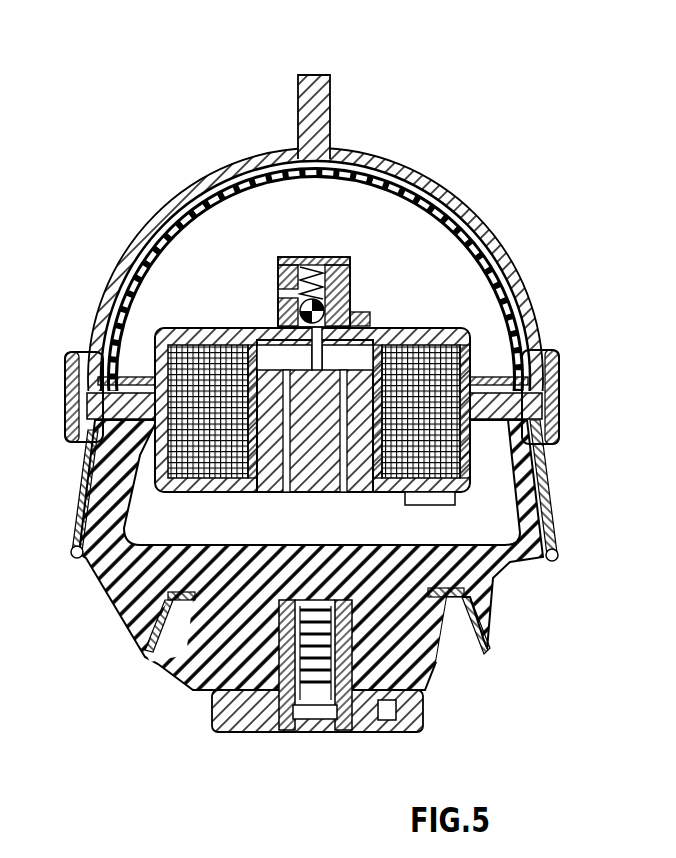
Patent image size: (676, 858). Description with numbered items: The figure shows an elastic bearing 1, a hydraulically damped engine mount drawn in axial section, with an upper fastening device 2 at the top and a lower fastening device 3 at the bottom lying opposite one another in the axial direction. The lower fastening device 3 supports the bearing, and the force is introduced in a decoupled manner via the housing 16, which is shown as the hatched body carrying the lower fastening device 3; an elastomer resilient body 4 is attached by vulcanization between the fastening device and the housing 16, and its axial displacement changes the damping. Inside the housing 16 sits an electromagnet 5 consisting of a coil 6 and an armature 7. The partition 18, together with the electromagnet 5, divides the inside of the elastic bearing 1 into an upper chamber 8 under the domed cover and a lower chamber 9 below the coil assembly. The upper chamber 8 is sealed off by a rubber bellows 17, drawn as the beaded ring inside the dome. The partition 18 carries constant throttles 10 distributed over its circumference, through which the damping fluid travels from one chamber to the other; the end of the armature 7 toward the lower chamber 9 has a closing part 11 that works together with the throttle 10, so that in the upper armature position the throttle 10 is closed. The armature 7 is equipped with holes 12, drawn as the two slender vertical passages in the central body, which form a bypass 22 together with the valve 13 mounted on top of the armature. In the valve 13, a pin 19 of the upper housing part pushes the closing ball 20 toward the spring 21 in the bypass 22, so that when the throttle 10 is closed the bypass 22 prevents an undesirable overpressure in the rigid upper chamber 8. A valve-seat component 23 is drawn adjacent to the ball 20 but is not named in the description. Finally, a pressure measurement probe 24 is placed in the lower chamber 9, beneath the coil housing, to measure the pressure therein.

The elastic bearing 1 is at (466, 142).
The upper fastening device 2 is at (314, 58).
The lower fastening device 3 is at (320, 738).
The elastomer resilient body 4 is at (193, 667).
The electromagnet 5 is at (395, 330).
The coil 6 is at (385, 392).
The armature 7 is at (400, 385).
The upper chamber 8 is at (245, 215).
The lower chamber 9 is at (128, 612).
The throttle 10 is at (550, 386).
The closing part 11 is at (327, 258).
The holes of the armature 12 is at (283, 490).
The valve 13 is at (309, 244).
The housing 16 is at (558, 402).
The rubber bellows 17 is at (195, 218).
The partition 18 is at (78, 432).
The pin 19 is at (312, 357).
The closing ball 20 is at (330, 306).
The spring 21 is at (346, 262).
The bypass 22 is at (334, 528).
The valve seat 23 is at (348, 330).
The pressure measurement probe 24 is at (443, 498).